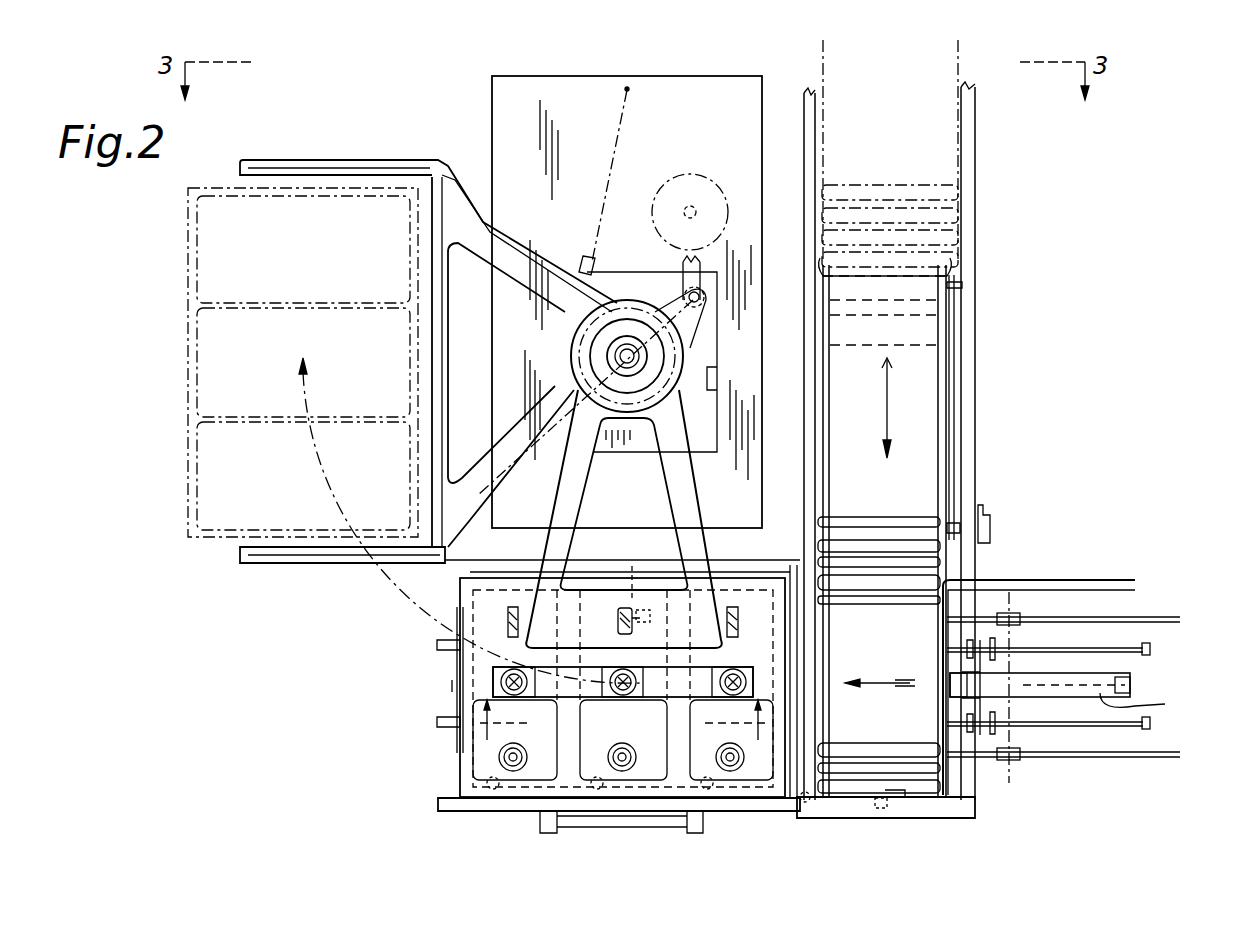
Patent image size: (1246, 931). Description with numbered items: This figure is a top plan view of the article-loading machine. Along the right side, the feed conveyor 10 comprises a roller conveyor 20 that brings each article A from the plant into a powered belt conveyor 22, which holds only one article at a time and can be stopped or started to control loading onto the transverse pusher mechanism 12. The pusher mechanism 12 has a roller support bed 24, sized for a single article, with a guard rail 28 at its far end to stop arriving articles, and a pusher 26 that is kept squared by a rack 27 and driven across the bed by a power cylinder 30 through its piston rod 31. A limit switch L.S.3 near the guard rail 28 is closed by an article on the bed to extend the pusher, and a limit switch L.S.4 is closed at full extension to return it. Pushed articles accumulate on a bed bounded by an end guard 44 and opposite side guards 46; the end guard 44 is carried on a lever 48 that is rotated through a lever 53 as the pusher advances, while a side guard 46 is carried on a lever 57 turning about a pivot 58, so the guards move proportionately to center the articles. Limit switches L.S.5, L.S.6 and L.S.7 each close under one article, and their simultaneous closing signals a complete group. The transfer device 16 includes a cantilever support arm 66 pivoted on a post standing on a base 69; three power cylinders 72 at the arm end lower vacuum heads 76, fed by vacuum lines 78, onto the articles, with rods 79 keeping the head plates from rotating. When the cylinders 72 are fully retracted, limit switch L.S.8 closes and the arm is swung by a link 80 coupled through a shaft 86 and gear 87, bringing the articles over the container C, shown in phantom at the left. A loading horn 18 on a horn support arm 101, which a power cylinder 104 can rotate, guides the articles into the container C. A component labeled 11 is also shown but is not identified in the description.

The feed conveyor 10 is at (1048, 396).
The lower frame assembly 11 is at (448, 686).
The transverse pusher mechanism 12 is at (1075, 578).
The transfer device 16 is at (505, 547).
The loading horn 18 is at (342, 158).
The roller conveyor 20 is at (988, 160).
The powered belt conveyor 22 is at (930, 358).
The support bed 24 is at (894, 648).
The pusher 26 is at (940, 708).
The rack 27 is at (1098, 618).
The guard rail 28 is at (905, 805).
The power cylinder 30 is at (1148, 704).
The piston rod 31 is at (1135, 680).
The end guard 44 is at (462, 737).
The side guards 46 is at (750, 574).
The lever 48 is at (440, 645).
The lever 53 is at (1000, 655).
The lever 57 is at (680, 826).
The pivot 58 is at (542, 826).
The cantilever support arm 66 is at (670, 500).
The base 69 is at (682, 86).
The power cylinders 72 is at (620, 698).
The vacuum head 76 is at (710, 766).
The vacuum lines 78 is at (626, 752).
The rods 79 is at (618, 622).
The link 80 is at (683, 268).
The shaft 86 is at (694, 208).
The gear 87 is at (686, 178).
The horn support arm 101 is at (447, 168).
The power cylinder 104 is at (607, 178).
The article A is at (205, 437).
The container C is at (188, 288).
The limit switch L.S.3 is at (876, 812).
The limit switch L.S.4 is at (808, 804).
The limit switch L.S.5 is at (468, 790).
The limit switch L.S.6 is at (594, 794).
The limit switch L.S.7 is at (707, 794).
The limit switch L.S.8 is at (625, 580).